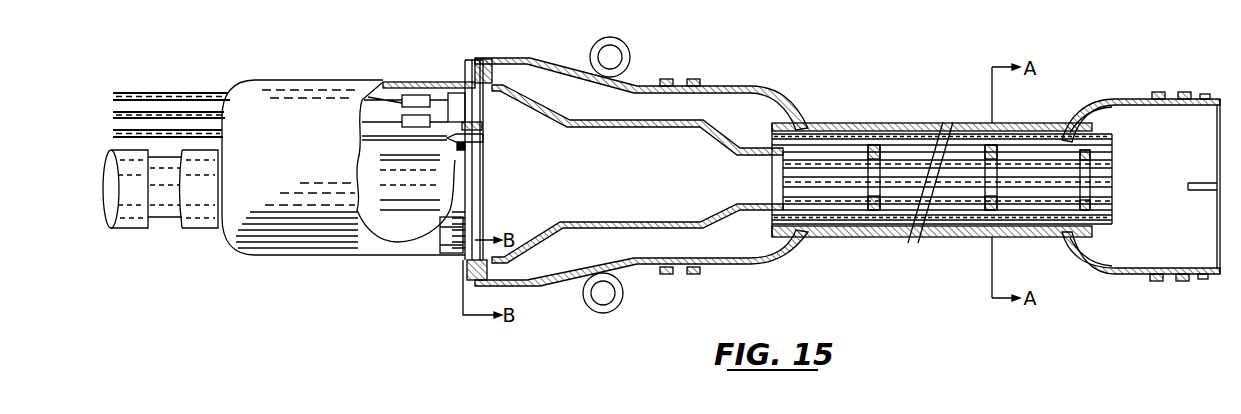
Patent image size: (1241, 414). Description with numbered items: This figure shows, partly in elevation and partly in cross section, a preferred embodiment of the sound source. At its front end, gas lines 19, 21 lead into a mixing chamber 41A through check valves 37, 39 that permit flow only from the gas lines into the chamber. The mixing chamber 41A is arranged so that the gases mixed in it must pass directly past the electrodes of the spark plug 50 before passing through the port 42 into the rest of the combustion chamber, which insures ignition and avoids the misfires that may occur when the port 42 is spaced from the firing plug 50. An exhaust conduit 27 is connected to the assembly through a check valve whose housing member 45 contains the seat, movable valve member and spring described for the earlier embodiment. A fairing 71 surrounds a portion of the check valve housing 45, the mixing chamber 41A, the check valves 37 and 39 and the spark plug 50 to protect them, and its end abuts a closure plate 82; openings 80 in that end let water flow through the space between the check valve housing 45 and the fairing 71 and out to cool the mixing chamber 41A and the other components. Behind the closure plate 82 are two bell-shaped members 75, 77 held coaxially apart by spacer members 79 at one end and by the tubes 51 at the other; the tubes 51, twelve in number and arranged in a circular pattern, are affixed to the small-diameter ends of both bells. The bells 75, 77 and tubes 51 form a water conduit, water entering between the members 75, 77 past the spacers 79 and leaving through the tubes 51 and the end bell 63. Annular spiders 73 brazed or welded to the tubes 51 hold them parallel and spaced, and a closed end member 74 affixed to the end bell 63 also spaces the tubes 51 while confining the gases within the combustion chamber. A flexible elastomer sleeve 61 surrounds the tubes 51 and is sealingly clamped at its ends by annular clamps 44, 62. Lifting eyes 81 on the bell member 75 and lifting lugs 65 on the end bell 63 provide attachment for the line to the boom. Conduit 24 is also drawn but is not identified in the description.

The conduit 19 is at (178, 93).
The conduit 21 is at (124, 114).
The lead wire 24 is at (122, 133).
The exhaust conduit 27 is at (122, 228).
The check valve housing member 45 is at (196, 228).
The fairing 71 is at (272, 82).
The check valve 37 is at (410, 95).
The check valve 39 is at (433, 115).
The mixing chamber 41A is at (462, 105).
The port 42 is at (485, 138).
The spark plug 50 is at (468, 150).
The closure plate 82 is at (484, 207).
The openings 80 is at (450, 244).
The spacer members 79 is at (489, 270).
The bell-shaped member 75 is at (528, 58).
The bell-shaped member 77 is at (541, 112).
The lifting eyes 81 is at (623, 298).
The annular clamp 44 is at (668, 79).
The sleeve 61 is at (835, 234).
The annular spiders 73 is at (995, 224).
The closed end member 74 is at (1084, 246).
The tubes 51 is at (1112, 206).
The annular clamp 62 is at (1184, 92).
The end bell 63 is at (1140, 278).
The lifting lugs 65 is at (1210, 190).